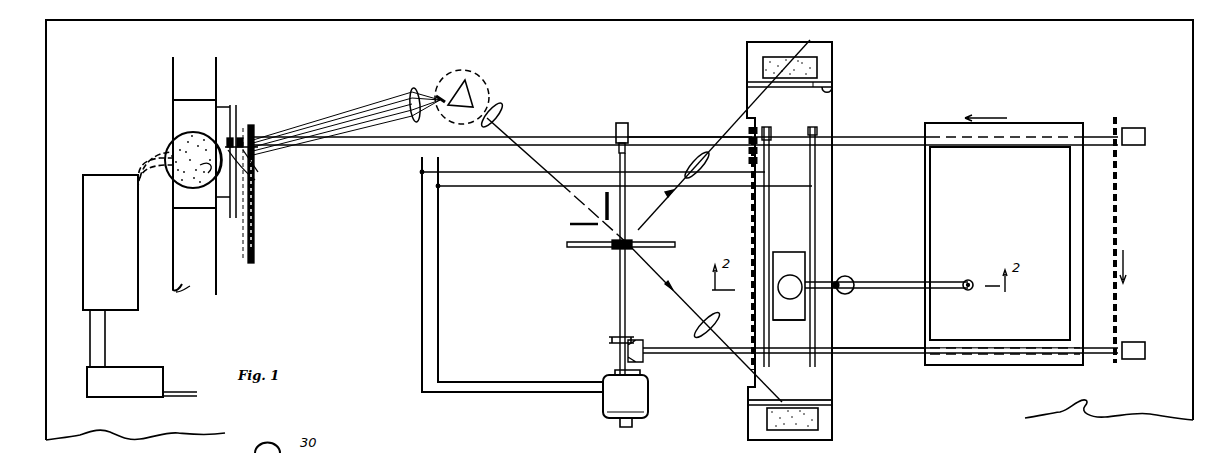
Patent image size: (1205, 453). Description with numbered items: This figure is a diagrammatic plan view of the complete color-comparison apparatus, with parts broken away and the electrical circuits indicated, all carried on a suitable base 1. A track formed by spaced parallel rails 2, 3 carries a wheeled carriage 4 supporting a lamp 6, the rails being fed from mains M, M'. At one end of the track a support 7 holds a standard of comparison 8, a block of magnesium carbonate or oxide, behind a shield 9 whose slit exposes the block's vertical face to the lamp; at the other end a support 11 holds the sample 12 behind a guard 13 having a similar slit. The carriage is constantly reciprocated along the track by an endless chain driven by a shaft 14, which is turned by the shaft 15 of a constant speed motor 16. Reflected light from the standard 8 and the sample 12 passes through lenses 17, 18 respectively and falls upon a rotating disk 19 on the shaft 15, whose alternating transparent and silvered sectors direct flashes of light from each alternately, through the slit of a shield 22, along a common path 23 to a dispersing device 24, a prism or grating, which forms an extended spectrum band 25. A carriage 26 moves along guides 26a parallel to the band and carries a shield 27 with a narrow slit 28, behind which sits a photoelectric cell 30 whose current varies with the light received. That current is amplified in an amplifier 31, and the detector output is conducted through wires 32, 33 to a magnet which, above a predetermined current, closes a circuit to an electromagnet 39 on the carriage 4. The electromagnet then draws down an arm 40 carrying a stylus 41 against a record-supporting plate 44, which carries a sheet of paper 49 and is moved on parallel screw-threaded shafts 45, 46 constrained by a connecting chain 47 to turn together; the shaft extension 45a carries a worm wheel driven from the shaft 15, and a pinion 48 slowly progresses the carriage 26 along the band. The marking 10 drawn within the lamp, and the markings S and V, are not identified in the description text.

The base 1 is at (1085, 412).
The rail 2 is at (815, 216).
The rail 3 is at (773, 222).
The wheeled carriage 4 is at (790, 252).
The lamp 6 is at (800, 320).
The support 7 is at (830, 434).
The standard of comparison 8 is at (822, 416).
The shield 9 is at (825, 401).
The lamp 10 is at (193, 160).
The support 11 is at (827, 65).
The sample 12 is at (736, 206).
The guard 13 is at (832, 90).
The shaft 14 is at (665, 348).
The motor shaft 15 is at (619, 294).
The constant speed motor 16 is at (610, 404).
The lens 17 is at (704, 322).
The lens 18 is at (700, 150).
The rotating disk 19 is at (568, 245).
The shield or guard 22 is at (570, 226).
The path 23 is at (525, 140).
The dispersing device 24 is at (470, 90).
The spectrum band 25 is at (262, 131).
The carriage 26 is at (212, 205).
The guides 26a is at (215, 265).
The shield 27 is at (234, 118).
The slit 28 is at (252, 170).
The photoelectric cell 30 is at (174, 145).
The amplifier 31 is at (83, 246).
The wire 32 is at (106, 340).
The wire 33 is at (90, 338).
The electromagnet 39 is at (852, 292).
The arm 40 is at (916, 282).
The stylus 41 is at (972, 281).
The record-supporting element 44 is at (1017, 123).
The screw-threaded shaft 45 is at (848, 137).
The shaft extension 45a is at (660, 137).
The screw-threaded shaft 46 is at (885, 349).
The connecting chain 47 is at (615, 126).
The pinion 48 is at (240, 142).
The sheet of paper 49 is at (1027, 170).
The sound unit S is at (790, 287).
The slit V is at (275, 257).
The main M is at (576, 273).
The main M' is at (624, 269).